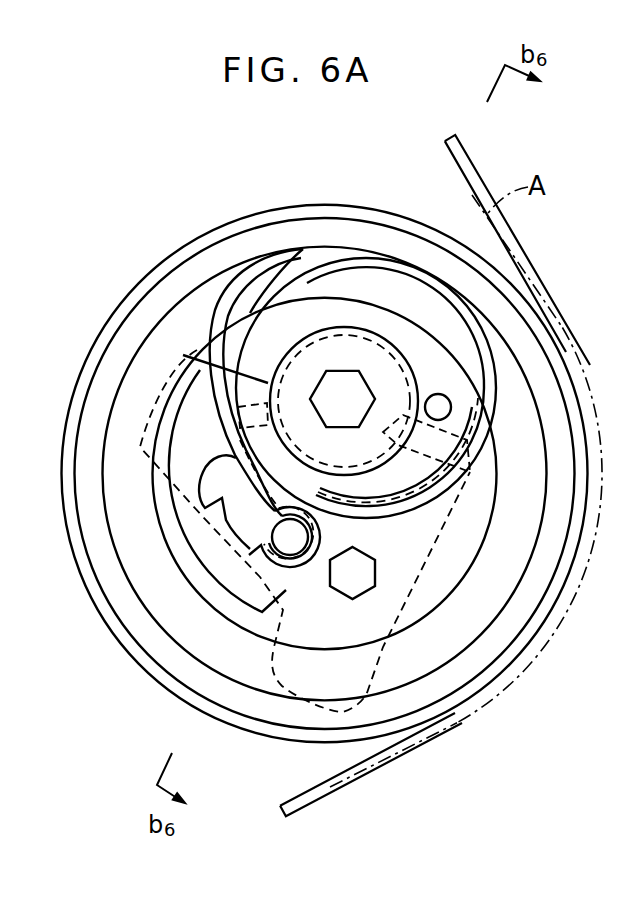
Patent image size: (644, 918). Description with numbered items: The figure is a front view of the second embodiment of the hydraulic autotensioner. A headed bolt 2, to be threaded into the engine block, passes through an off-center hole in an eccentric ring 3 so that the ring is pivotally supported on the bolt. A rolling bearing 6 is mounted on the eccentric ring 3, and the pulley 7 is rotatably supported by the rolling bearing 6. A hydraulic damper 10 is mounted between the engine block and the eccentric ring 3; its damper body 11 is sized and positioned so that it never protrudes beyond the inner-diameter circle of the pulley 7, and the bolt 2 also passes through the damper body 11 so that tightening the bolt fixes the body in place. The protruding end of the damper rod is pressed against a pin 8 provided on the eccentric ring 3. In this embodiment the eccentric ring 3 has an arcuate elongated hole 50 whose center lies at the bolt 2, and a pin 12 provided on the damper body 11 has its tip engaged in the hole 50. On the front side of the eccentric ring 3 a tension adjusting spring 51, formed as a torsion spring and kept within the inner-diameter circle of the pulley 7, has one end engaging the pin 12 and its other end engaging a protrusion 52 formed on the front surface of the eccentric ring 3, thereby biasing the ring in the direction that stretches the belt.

The bolt 2 is at (340, 350).
The eccentric ring 3 is at (266, 600).
The rolling bearing 6 is at (162, 292).
The pulley 7 is at (107, 330).
The pin 8 is at (442, 405).
The hydraulic damper 10 is at (383, 650).
The damper body 11 is at (440, 525).
The pin 12 is at (273, 535).
The arcuate elongated hole 50 is at (223, 498).
The tension adjusting spring 51 is at (482, 337).
The protrusion 52 is at (263, 347).